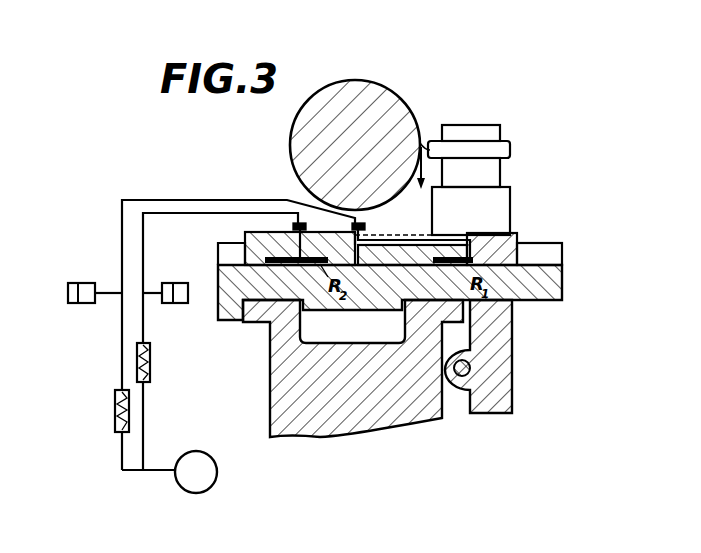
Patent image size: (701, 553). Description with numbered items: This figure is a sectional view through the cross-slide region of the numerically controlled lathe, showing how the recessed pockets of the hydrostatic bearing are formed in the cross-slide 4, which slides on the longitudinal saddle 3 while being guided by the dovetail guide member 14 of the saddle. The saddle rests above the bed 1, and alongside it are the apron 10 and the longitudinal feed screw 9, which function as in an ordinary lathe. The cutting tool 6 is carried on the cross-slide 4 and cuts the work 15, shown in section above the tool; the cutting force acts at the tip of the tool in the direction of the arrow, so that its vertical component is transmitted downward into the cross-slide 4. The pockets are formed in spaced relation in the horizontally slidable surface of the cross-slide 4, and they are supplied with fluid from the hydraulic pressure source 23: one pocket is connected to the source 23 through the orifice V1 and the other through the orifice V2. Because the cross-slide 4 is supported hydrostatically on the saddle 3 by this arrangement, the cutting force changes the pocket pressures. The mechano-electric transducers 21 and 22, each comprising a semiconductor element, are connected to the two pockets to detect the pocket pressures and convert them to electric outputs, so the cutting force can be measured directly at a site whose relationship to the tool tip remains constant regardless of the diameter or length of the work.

The bed 1 is at (397, 407).
The longitudinal saddle 3 is at (565, 277).
The cross-slide 4 is at (516, 235).
The cutting tool 6 is at (509, 144).
The longitudinal feed screw 9 is at (461, 378).
The apron 10 is at (505, 336).
The dovetail guide member 14 is at (548, 252).
The work 15 is at (382, 93).
The mechano-electric transducer 21 is at (82, 305).
The mechano-electric transducer 22 is at (175, 305).
The hydraulic pressure source 23 is at (218, 473).
The orifice V1 is at (113, 420).
The orifice V2 is at (151, 363).